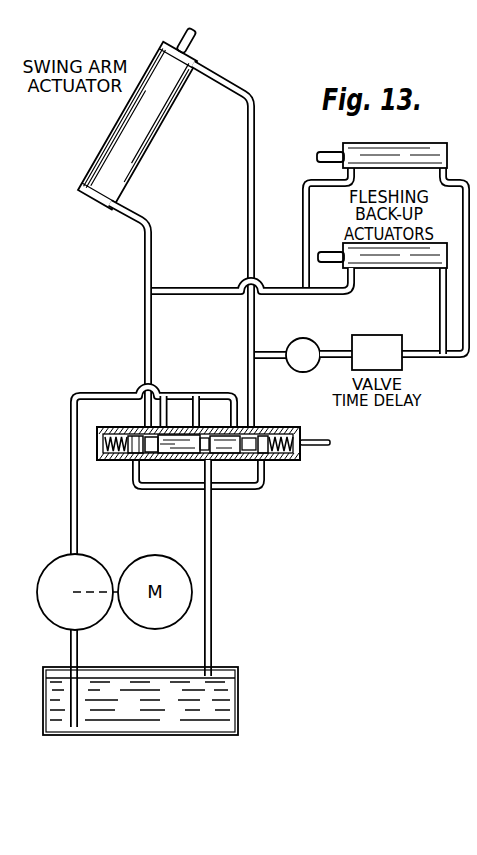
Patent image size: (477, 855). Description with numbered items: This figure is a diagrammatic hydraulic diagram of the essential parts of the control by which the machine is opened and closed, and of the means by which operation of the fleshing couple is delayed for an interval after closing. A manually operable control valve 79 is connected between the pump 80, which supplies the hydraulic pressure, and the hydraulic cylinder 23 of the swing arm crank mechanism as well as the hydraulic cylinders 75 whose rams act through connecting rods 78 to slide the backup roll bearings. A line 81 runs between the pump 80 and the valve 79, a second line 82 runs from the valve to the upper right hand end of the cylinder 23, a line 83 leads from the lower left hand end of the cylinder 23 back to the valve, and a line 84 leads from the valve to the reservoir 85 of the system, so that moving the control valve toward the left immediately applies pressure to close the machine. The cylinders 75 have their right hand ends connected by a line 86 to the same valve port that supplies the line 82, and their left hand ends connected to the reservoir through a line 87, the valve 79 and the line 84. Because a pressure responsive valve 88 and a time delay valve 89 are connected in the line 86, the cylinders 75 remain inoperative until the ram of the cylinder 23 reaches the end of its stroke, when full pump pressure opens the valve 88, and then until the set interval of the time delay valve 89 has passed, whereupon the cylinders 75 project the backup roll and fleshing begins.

The hydraulic cylinder 23 is at (148, 139).
The hydraulic cylinders 75 is at (412, 143).
The connecting rods 78 is at (330, 152).
The control valve 79 is at (280, 462).
The pump 80 is at (90, 567).
The line 81 is at (203, 374).
The second line 82 is at (246, 198).
The line 83 is at (143, 264).
The line 84 is at (214, 556).
The reservoir 85 is at (239, 684).
The line 86 is at (272, 360).
The line 87 is at (217, 277).
The pressure responsive valve 88 is at (310, 326).
The time delay valve 89 is at (390, 323).